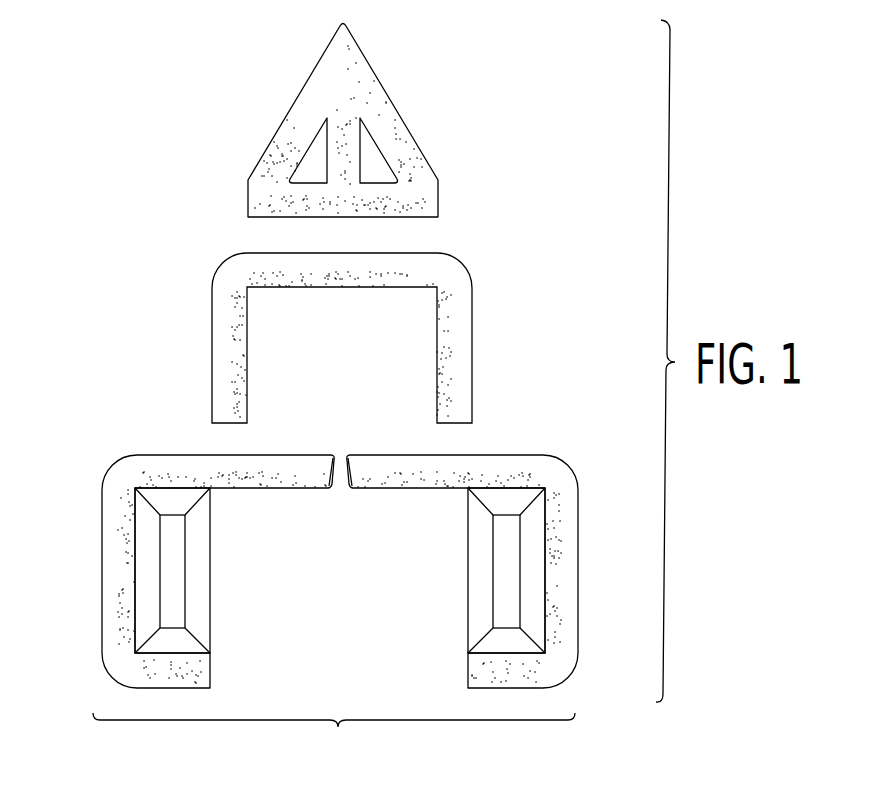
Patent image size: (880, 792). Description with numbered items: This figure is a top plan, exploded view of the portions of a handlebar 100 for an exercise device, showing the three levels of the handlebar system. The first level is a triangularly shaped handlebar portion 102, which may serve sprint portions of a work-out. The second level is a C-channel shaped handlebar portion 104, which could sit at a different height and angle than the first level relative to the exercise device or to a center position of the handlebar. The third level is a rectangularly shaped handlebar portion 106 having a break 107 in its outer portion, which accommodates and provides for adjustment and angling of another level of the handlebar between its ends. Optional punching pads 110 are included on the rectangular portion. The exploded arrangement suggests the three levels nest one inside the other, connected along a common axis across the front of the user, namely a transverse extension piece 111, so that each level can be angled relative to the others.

The handlebar 100 is at (110, 163).
The triangularly shaped handlebar portion 102 is at (285, 118).
The C-channel shaped handlebar portion 104 is at (212, 333).
The rectangularly shaped handlebar portion 106 is at (104, 518).
The break 107 is at (340, 470).
The punching pads 110 is at (210, 552).
The transverse extension piece 111 is at (357, 757).